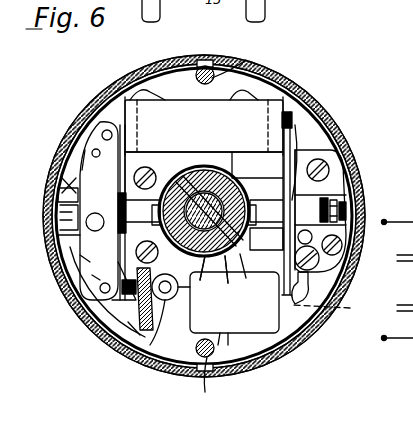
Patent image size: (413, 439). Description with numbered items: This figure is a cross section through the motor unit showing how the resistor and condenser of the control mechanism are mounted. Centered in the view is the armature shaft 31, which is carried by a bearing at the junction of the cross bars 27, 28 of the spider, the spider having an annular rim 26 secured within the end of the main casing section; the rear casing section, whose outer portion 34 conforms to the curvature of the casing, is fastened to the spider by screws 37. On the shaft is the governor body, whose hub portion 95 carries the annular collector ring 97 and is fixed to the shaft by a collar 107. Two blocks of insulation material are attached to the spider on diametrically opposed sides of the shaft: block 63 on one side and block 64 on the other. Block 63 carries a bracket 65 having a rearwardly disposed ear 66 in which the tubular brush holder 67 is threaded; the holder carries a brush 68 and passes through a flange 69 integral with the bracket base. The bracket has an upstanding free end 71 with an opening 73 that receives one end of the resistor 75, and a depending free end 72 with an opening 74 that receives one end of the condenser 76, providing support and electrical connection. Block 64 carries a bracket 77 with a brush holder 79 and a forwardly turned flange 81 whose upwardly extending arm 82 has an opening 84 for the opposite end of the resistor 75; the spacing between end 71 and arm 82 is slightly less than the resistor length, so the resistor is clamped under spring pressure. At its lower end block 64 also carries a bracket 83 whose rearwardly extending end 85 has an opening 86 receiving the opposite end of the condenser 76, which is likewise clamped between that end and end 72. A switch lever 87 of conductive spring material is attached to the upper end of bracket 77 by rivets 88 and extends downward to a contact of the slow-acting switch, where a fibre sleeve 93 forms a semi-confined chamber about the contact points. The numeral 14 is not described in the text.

The bracket 14 is at (243, 5).
The annular rim 26 is at (314, 127).
The cross bar 27 is at (247, 92).
The cross bar 28 is at (234, 293).
The armature shaft 31 is at (240, 254).
The portion of rear section 34 is at (165, 345).
The screws 37 is at (220, 68).
The block 63 is at (340, 153).
The block 64 is at (62, 188).
The bracket 65 is at (318, 198).
The ear 66 is at (337, 203).
The tubular brush holder 67 is at (348, 205).
The brush 68 is at (257, 200).
The flange 69 is at (263, 272).
The upstanding free end 71 is at (294, 118).
The depending free end 72 is at (306, 300).
The opening 73 is at (305, 124).
The opening 74 is at (330, 309).
The resistor 75 is at (204, 122).
The condenser 76 is at (133, 330).
The bracket 77 is at (66, 168).
The brush holder 79 is at (92, 262).
The flange 81 is at (113, 202).
The arm 82 is at (84, 155).
The bracket 83 is at (158, 283).
The opening 84 is at (106, 128).
The rearwardly extending end 85 is at (130, 300).
The opening 86 is at (122, 320).
The switch lever 87 is at (98, 242).
The rivets 88 is at (96, 148).
The sleeve 93 is at (98, 277).
The hub portion 95 is at (209, 325).
The collector ring 97 is at (215, 284).
The collar 107 is at (237, 280).